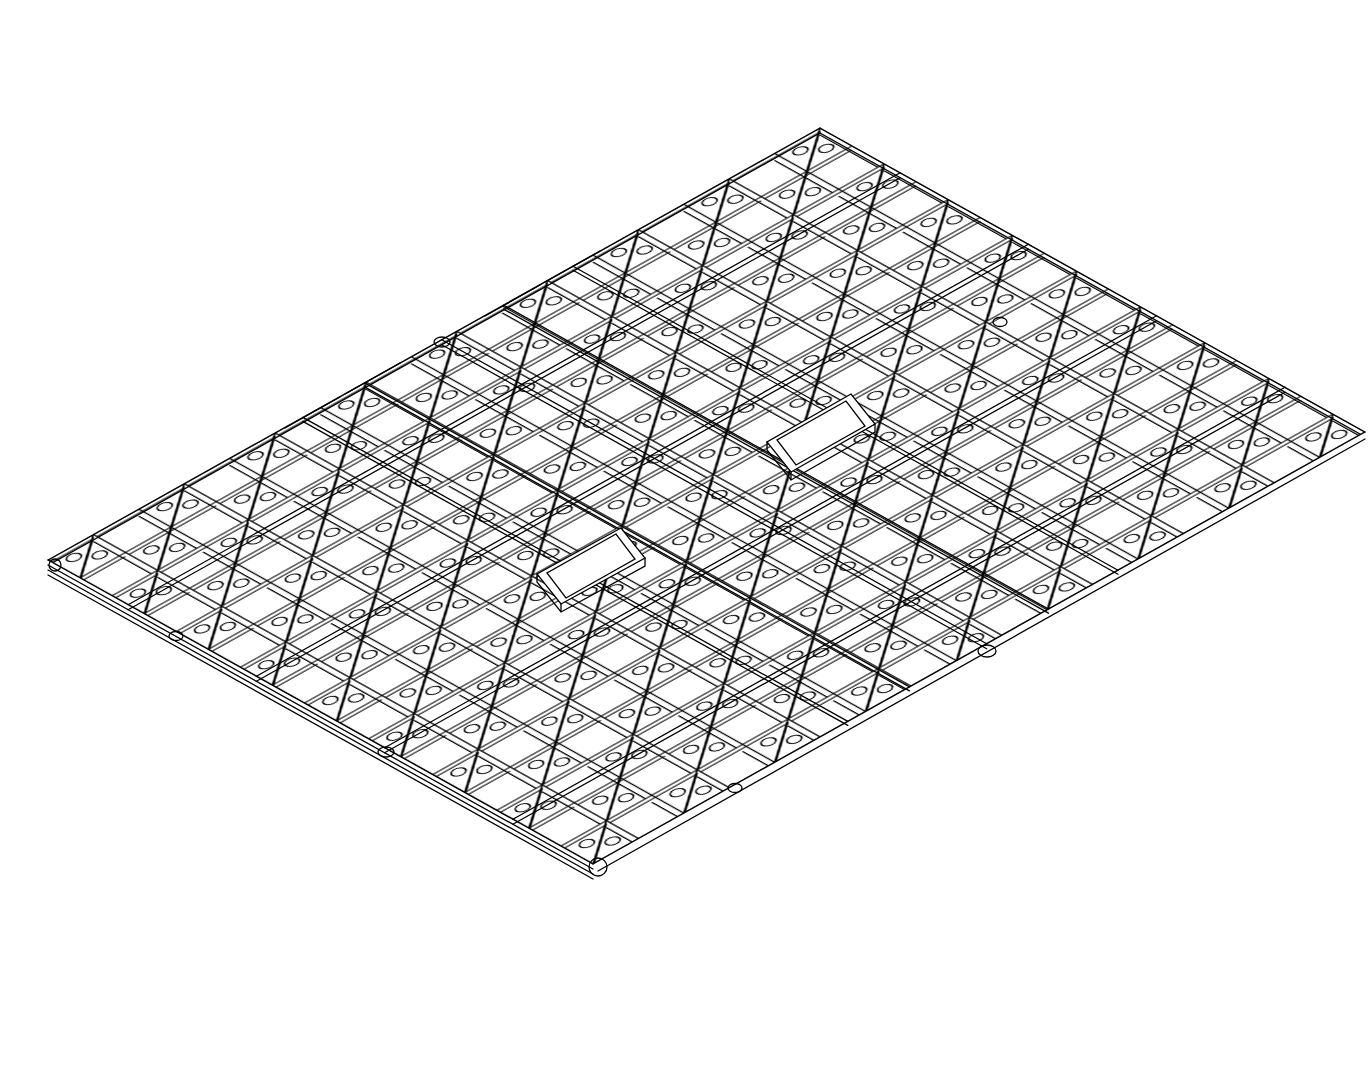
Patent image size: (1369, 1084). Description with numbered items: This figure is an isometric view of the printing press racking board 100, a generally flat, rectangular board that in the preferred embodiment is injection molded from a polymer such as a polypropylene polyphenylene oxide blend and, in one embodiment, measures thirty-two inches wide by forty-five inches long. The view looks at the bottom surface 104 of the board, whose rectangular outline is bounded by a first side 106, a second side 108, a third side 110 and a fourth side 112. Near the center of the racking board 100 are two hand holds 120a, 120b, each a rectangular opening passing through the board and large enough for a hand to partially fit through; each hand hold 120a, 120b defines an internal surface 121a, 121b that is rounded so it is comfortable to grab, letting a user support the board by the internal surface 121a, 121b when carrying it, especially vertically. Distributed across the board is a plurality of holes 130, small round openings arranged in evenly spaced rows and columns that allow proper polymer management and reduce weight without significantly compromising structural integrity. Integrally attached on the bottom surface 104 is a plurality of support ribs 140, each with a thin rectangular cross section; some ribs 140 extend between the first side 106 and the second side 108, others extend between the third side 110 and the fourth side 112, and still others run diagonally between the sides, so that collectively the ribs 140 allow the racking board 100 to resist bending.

The printing press racking board 100 is at (706, 531).
The bottom surface 104 is at (887, 252).
The first side 106 is at (1140, 580).
The second side 108 is at (434, 345).
The third side 110 is at (1200, 340).
The fourth side 112 is at (320, 722).
The hand hold 120a is at (510, 302).
The hand hold 120b is at (370, 380).
The internal surface 121a is at (572, 267).
The internal surface 121b is at (312, 412).
The hole 130 is at (1000, 322).
The support rib 140 is at (388, 752).